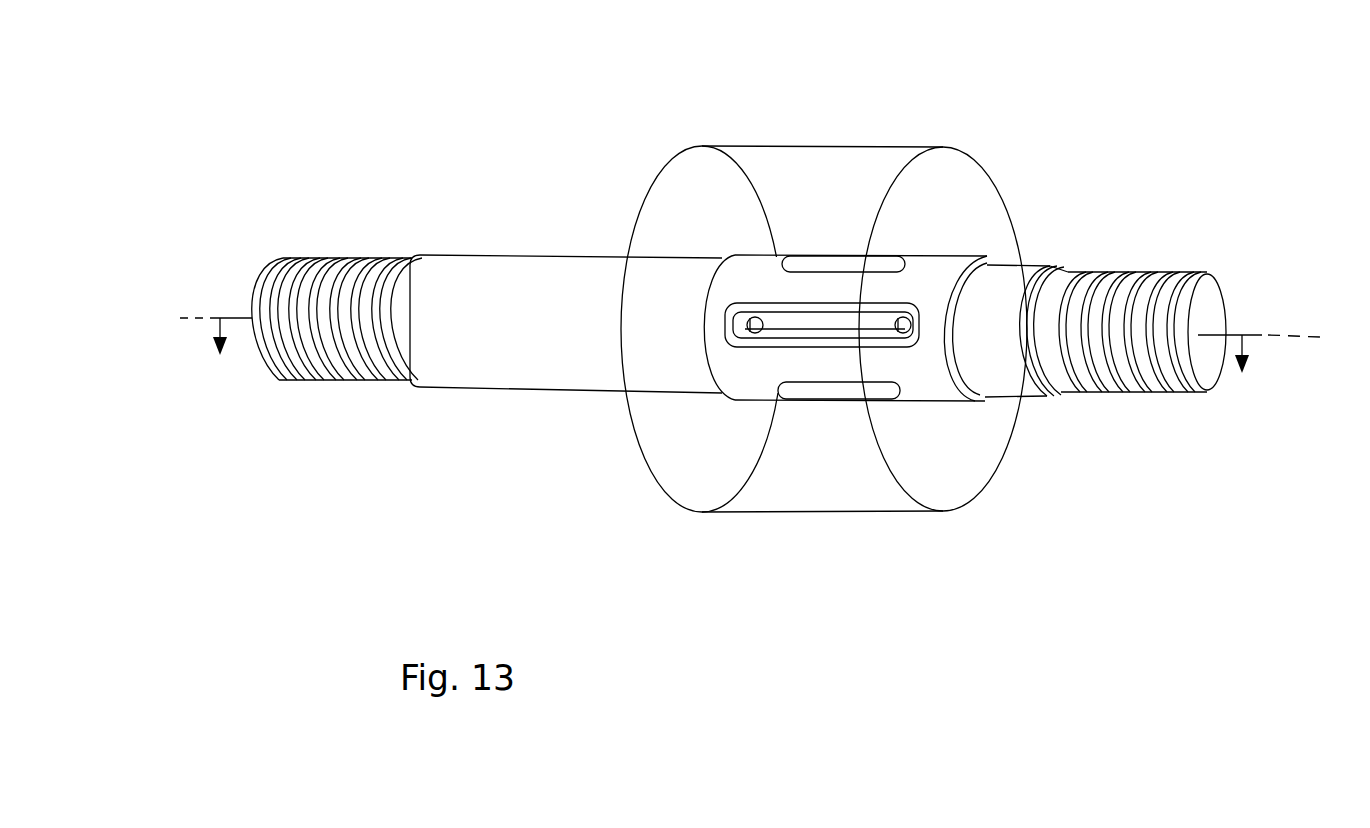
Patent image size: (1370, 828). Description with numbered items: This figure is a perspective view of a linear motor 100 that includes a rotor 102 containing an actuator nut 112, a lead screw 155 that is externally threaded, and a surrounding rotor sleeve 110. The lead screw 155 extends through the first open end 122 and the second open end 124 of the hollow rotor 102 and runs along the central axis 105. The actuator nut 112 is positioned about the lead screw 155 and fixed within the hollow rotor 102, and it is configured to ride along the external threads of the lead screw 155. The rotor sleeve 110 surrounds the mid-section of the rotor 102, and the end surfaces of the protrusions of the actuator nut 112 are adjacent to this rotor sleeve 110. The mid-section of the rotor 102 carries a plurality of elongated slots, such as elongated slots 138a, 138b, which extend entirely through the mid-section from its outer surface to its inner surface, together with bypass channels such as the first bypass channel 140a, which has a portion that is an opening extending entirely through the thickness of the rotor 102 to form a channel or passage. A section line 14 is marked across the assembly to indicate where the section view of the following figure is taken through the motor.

The linear motor 100 is at (1125, 90).
The rotor 102 is at (1003, 400).
The central axis 105 is at (1265, 334).
The rotor sleeve 110 is at (903, 147).
The actuator nut 112 is at (870, 321).
The first open end 122 is at (1060, 397).
The second open end 124 is at (420, 386).
The elongated slot 138a is at (827, 400).
The elongated slot 138b is at (798, 252).
The first bypass channel 140a is at (793, 343).
The lead screw 155 is at (1200, 276).
The section line 14 is at (731, 361).